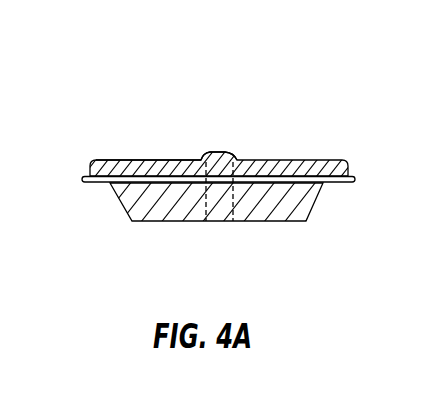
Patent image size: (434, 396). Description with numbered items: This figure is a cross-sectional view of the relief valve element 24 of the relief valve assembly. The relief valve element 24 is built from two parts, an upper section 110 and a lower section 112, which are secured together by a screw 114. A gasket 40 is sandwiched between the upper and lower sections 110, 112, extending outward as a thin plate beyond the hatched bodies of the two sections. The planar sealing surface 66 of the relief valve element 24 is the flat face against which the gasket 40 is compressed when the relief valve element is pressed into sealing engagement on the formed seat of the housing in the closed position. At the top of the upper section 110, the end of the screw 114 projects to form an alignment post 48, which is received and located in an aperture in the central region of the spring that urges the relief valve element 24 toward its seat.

The relief valve element 24 is at (216, 145).
The gasket 40 is at (83, 179).
The alignment post 48 is at (225, 151).
The planar sealing surface 66 is at (113, 160).
The upper section 110 is at (307, 160).
The lower section 112 is at (275, 222).
The screw 114 is at (205, 218).